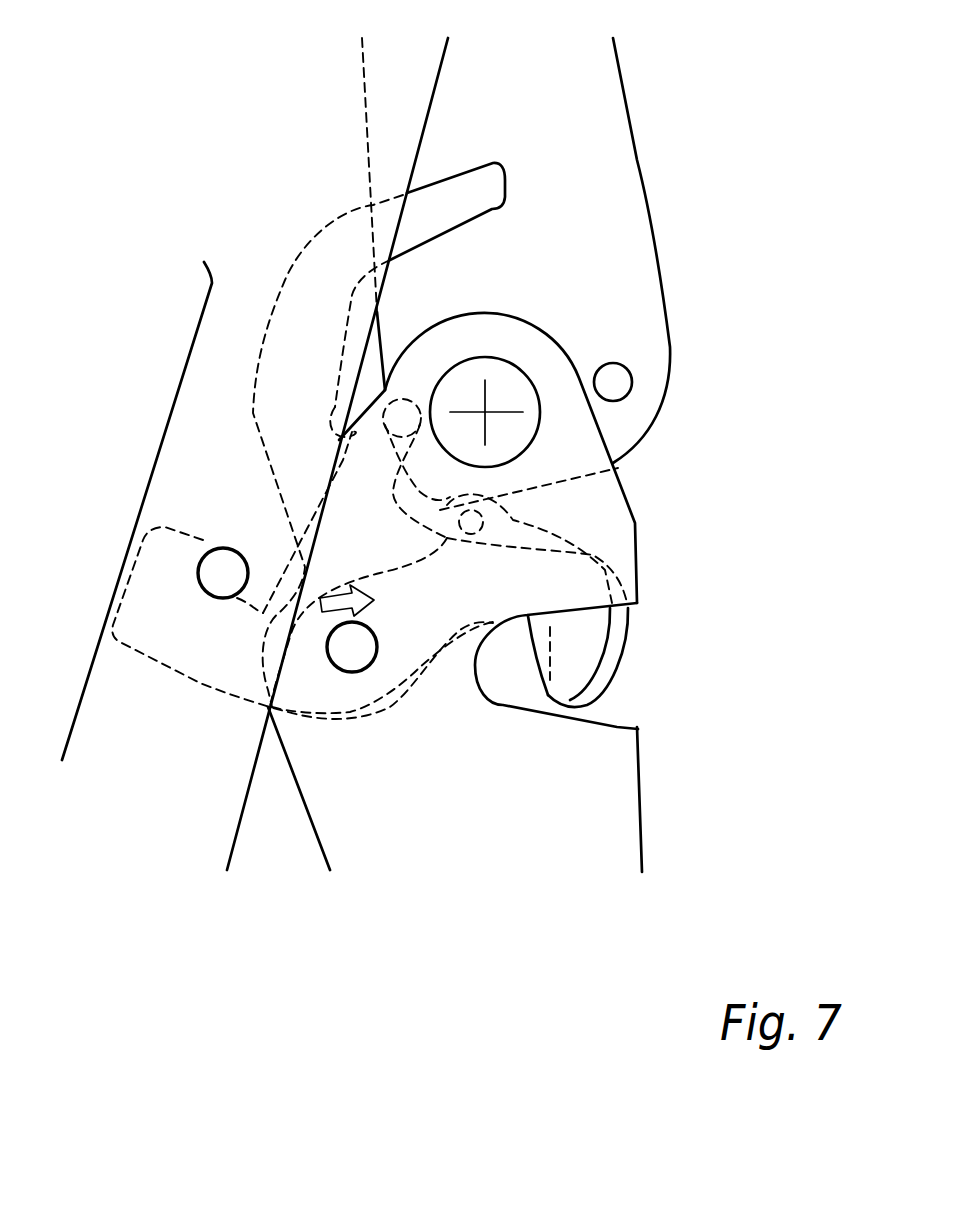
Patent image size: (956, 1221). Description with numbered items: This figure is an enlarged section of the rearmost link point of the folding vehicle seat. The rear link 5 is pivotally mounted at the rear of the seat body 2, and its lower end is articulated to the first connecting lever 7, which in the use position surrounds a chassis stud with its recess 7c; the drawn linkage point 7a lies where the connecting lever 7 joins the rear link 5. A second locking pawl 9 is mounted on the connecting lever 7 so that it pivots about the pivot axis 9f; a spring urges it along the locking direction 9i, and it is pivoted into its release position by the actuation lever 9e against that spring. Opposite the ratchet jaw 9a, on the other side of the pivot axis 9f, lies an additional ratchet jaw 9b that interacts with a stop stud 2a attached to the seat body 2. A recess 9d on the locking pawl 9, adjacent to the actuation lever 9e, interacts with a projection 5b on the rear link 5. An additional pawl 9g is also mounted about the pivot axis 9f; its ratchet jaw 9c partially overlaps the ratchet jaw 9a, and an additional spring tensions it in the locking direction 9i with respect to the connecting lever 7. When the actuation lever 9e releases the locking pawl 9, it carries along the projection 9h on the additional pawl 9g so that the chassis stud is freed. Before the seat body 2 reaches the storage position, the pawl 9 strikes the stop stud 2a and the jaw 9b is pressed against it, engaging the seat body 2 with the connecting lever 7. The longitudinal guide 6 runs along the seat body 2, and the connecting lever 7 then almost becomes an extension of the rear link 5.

The seat body 2 is at (237, 855).
The stop stud 2a is at (222, 548).
The rear link 5 is at (650, 203).
The projection 5b is at (633, 378).
The longitudinal guide 6 is at (63, 703).
The first connecting lever 7 is at (643, 822).
The pivot 7a is at (488, 413).
The recess 7c is at (615, 723).
The second locking pawl 9 is at (250, 405).
The ratchet jaw 9a is at (547, 638).
The additional ratchet jaw 9b is at (215, 595).
The ratchet jaw 9c is at (534, 667).
The recess 9d is at (350, 420).
The actuation lever 9e is at (465, 170).
The pivot axis 9f is at (365, 672).
The additional pawl 9g is at (431, 663).
The projection 9h is at (513, 520).
The locking direction 9i is at (352, 572).